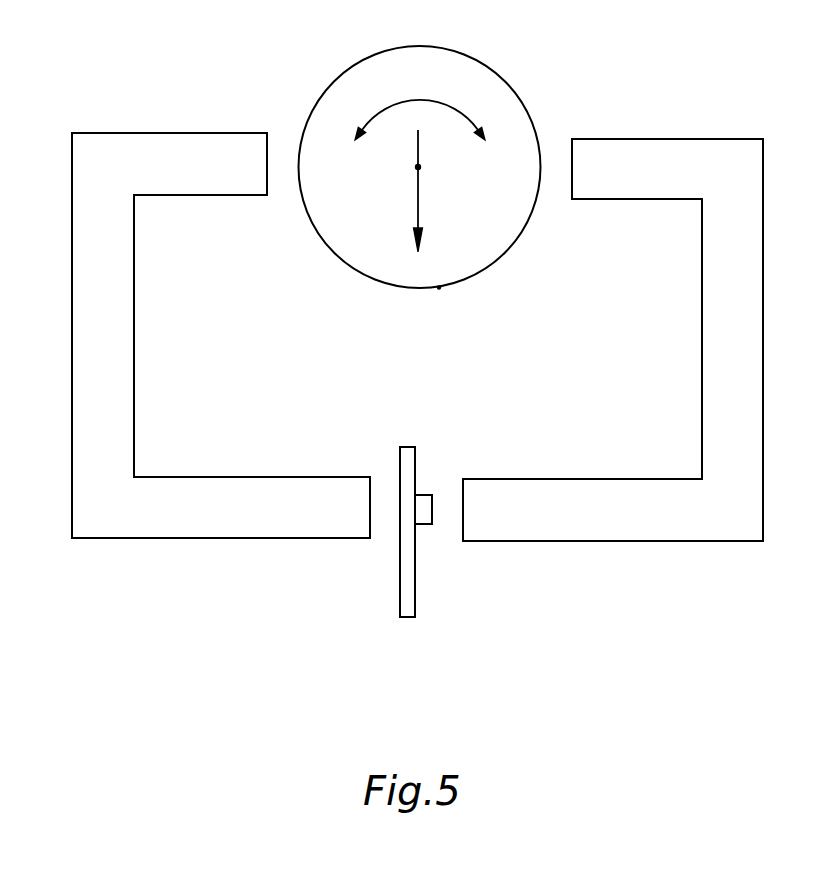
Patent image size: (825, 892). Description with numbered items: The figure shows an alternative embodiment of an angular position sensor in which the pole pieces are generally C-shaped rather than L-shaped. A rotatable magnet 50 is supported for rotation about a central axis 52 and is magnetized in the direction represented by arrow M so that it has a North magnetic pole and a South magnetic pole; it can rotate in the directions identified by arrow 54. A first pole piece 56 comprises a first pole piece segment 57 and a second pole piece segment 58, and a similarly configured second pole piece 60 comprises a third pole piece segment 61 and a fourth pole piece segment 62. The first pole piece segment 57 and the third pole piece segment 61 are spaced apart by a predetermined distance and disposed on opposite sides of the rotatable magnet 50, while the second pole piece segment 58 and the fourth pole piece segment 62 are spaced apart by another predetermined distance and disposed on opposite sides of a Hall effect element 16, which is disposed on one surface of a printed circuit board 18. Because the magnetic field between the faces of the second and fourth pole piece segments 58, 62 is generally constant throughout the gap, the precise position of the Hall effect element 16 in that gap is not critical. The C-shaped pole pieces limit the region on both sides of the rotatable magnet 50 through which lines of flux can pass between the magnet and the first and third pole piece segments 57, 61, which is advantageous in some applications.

The Hall effect element 16 is at (425, 492).
The printed circuit board 18 is at (407, 598).
The rotatable magnet 50 is at (422, 45).
The central axis 52 is at (421, 166).
The arrow 54 is at (432, 98).
The first pole piece 56 is at (72, 325).
The first pole piece segment 57 is at (264, 117).
The second pole piece segment 58 is at (367, 545).
The second pole piece 60 is at (763, 335).
The third pole piece segment 61 is at (693, 122).
The fourth pole piece segment 62 is at (703, 547).
The arrow M is at (418, 208).